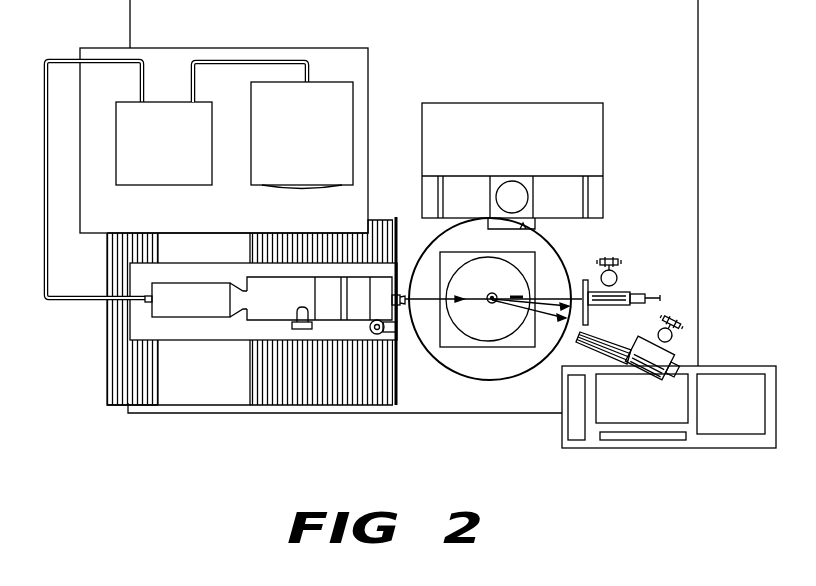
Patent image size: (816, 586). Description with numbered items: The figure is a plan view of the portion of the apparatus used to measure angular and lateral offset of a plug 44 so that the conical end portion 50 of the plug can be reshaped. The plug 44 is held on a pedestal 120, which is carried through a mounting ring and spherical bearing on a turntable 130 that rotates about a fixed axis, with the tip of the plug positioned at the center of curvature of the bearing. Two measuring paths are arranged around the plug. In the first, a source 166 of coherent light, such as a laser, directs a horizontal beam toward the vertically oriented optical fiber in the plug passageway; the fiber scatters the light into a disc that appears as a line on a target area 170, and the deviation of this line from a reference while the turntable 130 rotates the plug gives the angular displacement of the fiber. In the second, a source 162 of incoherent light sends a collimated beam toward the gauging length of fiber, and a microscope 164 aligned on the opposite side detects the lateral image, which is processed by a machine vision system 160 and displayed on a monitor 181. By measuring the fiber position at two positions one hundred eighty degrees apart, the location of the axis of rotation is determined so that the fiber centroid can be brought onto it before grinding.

The end portion 50 is at (103, 21).
The machine vision system 160 is at (146, 186).
The monitor 181 is at (291, 186).
The target area 170 is at (176, 310).
The microscope 164 is at (383, 283).
The turntable 130 is at (456, 379).
The pedestal 120 is at (497, 304).
The plug 44 is at (491, 292).
The source of incoherent light 162 is at (625, 283).
The source of coherent light 166 is at (656, 385).